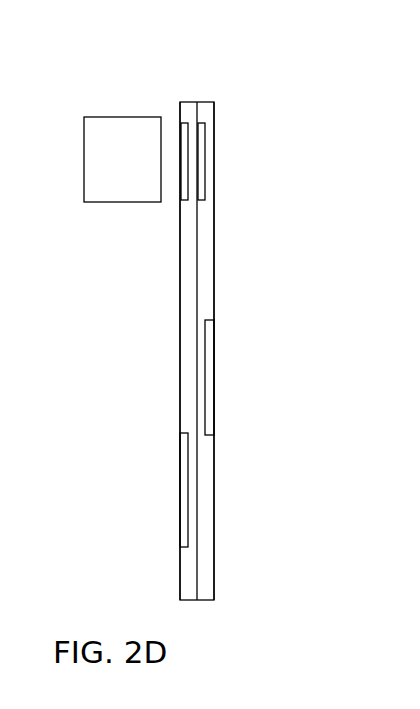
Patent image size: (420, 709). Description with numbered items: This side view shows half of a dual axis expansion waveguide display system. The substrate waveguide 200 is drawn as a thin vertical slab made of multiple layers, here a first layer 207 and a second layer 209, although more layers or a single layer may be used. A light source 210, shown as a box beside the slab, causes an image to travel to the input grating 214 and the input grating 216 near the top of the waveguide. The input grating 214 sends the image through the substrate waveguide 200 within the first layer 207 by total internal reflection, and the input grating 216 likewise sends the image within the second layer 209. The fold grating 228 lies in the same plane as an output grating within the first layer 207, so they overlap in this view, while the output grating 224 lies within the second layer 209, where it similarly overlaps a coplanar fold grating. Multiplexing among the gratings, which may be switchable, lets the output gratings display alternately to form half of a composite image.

The substrate waveguide 200 is at (196, 70).
The first layer 207 is at (180, 283).
The second layer 209 is at (206, 247).
The light source 210 is at (130, 117).
The input grating 214 is at (180, 126).
The input grating 216 is at (206, 134).
The output grating 224 is at (210, 363).
The fold grating 228 is at (180, 508).